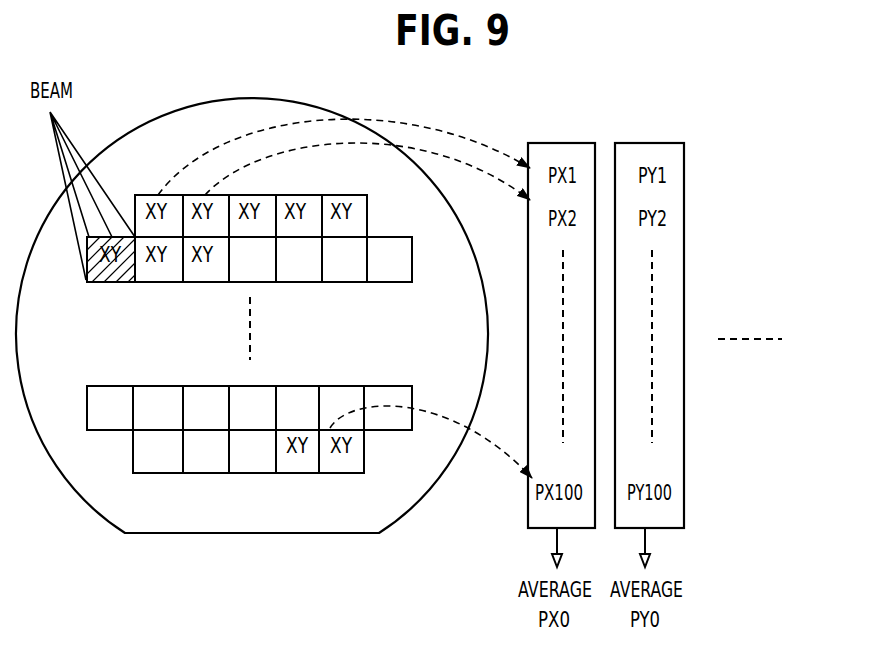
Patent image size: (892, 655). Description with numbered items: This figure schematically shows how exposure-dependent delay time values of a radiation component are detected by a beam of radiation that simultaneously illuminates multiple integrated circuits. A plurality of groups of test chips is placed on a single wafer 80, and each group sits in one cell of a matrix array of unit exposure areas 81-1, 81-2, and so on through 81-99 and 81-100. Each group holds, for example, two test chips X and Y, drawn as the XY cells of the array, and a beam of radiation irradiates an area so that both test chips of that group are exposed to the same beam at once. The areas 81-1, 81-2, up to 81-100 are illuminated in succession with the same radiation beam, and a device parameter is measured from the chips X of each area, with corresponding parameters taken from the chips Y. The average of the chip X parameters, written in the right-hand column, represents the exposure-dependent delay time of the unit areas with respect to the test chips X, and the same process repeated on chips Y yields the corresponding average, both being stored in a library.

The wafer 80 is at (253, 100).
The unit exposure area 81-1 is at (152, 195).
The unit exposure area 81-2 is at (200, 195).
The unit exposure area 81-99 is at (290, 473).
The unit exposure area 81-100 is at (340, 473).